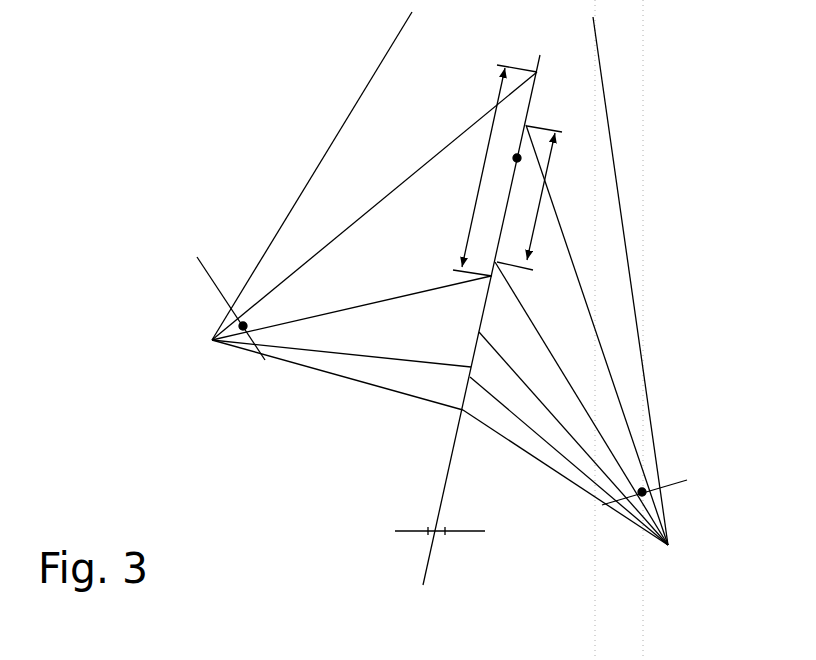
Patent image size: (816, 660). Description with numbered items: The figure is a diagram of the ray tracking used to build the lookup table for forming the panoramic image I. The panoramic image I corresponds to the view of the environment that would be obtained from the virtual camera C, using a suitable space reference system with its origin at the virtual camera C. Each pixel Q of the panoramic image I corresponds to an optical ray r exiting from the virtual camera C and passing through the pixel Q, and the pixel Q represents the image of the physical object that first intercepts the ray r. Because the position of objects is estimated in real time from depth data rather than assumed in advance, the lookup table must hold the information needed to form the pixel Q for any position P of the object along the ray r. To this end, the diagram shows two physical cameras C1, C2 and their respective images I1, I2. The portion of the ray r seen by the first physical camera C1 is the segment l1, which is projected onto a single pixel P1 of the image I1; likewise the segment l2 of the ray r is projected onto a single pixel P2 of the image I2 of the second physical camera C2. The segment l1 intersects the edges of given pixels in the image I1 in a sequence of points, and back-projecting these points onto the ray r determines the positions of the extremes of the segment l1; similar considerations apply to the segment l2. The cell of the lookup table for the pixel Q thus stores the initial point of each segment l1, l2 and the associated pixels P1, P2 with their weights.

The first physical camera C1 is at (362, 211).
The second physical camera C2 is at (580, 297).
The optical ray r is at (487, 315).
The position of the object P is at (508, 152).
The first segment of the ray l1 is at (495, 170).
The second segment of the ray l2 is at (529, 198).
The first camera image I1 is at (228, 296).
The first image pixel P1 is at (255, 318).
The second camera image I2 is at (648, 483).
The second image pixel P2 is at (637, 479).
The panoramic image I is at (427, 531).
The pixel of the panoramic image Q is at (423, 511).
The virtual camera C is at (409, 603).